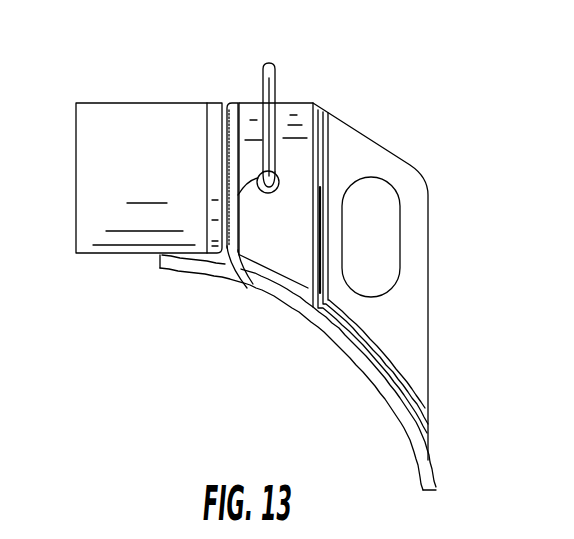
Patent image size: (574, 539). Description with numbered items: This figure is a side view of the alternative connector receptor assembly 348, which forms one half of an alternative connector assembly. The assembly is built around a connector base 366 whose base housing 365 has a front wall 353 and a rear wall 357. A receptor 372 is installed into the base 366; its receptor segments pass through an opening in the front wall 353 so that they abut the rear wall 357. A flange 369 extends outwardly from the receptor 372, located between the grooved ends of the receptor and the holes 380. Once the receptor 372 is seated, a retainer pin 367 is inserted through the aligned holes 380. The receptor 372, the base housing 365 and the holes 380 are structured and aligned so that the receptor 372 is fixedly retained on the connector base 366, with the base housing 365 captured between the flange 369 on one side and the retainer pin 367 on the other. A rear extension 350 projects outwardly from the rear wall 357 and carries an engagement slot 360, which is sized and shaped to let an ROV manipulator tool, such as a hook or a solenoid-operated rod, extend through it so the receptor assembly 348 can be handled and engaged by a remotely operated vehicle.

The connector receptor assembly 348 is at (485, 86).
The rear extension 350 is at (380, 165).
The front wall 353 is at (220, 175).
The rear wall 357 is at (327, 133).
The engagement slot 360 is at (382, 237).
The base housing 365 is at (267, 225).
The connector base 366 is at (413, 335).
The retainer pin 367 is at (270, 80).
The flange 369 is at (212, 123).
The receptor 372 is at (162, 128).
The holes 380 is at (230, 260).